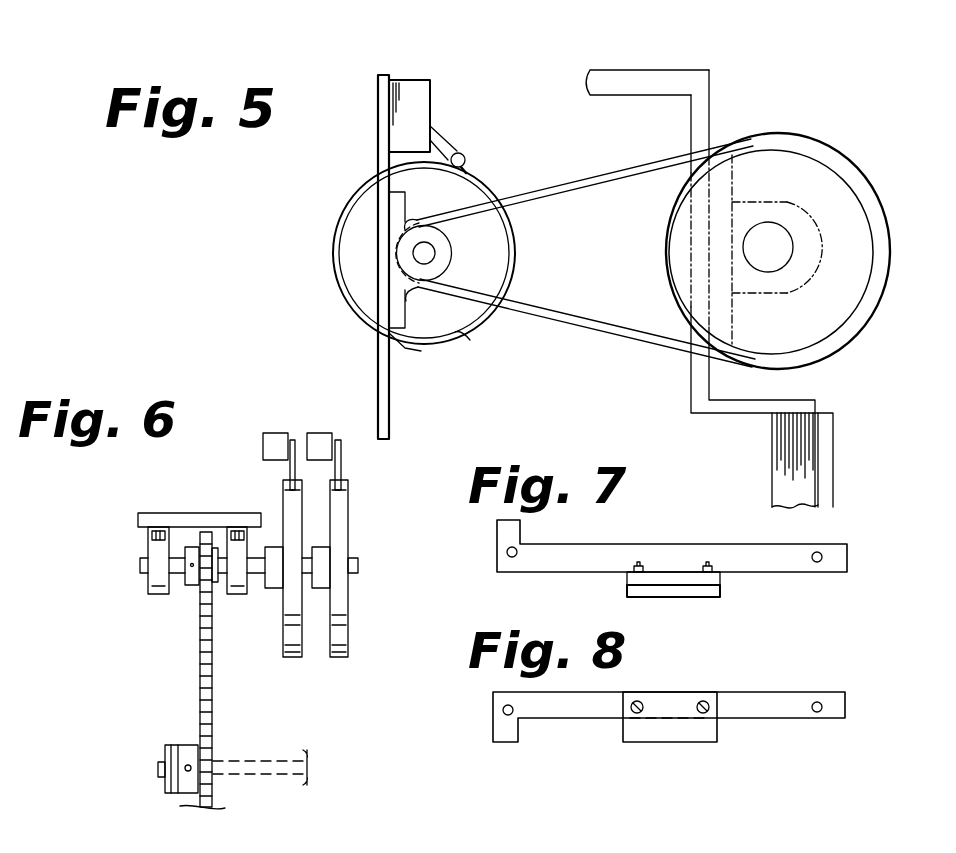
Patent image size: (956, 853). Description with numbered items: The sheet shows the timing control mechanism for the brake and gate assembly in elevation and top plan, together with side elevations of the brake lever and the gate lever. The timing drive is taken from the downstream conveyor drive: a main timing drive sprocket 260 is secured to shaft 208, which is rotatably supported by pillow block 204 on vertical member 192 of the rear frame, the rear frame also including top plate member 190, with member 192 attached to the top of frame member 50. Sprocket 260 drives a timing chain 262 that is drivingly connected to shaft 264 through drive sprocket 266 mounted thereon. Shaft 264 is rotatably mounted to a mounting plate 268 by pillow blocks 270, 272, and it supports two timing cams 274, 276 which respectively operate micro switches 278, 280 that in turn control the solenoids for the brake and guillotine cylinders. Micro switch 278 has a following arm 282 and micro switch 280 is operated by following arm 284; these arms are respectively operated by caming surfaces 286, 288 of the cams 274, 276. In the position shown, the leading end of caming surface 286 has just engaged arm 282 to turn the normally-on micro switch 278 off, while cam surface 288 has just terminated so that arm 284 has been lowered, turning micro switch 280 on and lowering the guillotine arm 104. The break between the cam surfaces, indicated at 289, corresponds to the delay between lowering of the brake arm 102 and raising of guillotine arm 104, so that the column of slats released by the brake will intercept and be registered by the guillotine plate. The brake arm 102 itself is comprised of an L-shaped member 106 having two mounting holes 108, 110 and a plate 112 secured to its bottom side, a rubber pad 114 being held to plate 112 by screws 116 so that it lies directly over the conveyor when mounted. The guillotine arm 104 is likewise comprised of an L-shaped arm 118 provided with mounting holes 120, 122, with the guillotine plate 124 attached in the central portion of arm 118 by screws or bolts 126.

In FIG. 5, the frame member 50 is at (780, 445).
In FIG. 7, the brake arm 102 is at (588, 544).
In FIG. 8, the guillotine arm 104 is at (620, 682).
In FIG. 7, the L-shaped member 106 is at (758, 568).
In FIG. 7, the mounting hole 108 is at (507, 550).
In FIG. 7, the mounting hole 110 is at (817, 563).
In FIG. 7, the plate 112 is at (627, 578).
In FIG. 7, the rubber pad 114 is at (658, 598).
In FIG. 7, the screws 116 is at (712, 562).
In FIG. 8, the L-shaped arm 118 is at (742, 705).
In FIG. 8, the mounting hole 120 is at (503, 710).
In FIG. 8, the mounting hole 122 is at (815, 713).
In FIG. 8, the guillotine plate 124 is at (638, 745).
In FIG. 8, the screws or bolts 126 is at (705, 700).
In FIG. 5, the top plate member 190 is at (640, 70).
In FIG. 5, the vertical member 192 is at (707, 92).
In FIG. 5, the pillow block 204 is at (762, 297).
In FIG. 5, the shaft 208 is at (768, 247).
In FIG. 6, the shaft 208 is at (158, 775).
In FIG. 5, the main timing drive sprocket 260 is at (798, 300).
In FIG. 6, the main timing drive sprocket 260 is at (188, 745).
In FIG. 5, the timing chain 262 is at (590, 320).
In FIG. 6, the timing chain 262 is at (250, 720).
In FIG. 5, the shaft 264 is at (421, 256).
In FIG. 6, the shaft 264 is at (140, 570).
In FIG. 5, the drive sprocket 266 is at (408, 246).
In FIG. 6, the drive sprocket 266 is at (190, 588).
In FIG. 5, the mounting plate 268 is at (390, 415).
In FIG. 6, the mounting plate 268 is at (170, 518).
In FIG. 5, the pillow block 270 is at (418, 347).
In FIG. 6, the pillow block 270 is at (150, 592).
In FIG. 6, the pillow block 272 is at (262, 592).
In FIG. 5, the timing cam 274 is at (495, 273).
In FIG. 6, the timing cam 274 is at (262, 625).
In FIG. 6, the timing cam 276 is at (350, 605).
In FIG. 5, the micro switch 278 is at (432, 93).
In FIG. 6, the micro switch 278 is at (270, 437).
In FIG. 6, the micro switch 280 is at (335, 414).
In FIG. 5, the following arm 282 is at (460, 152).
In FIG. 6, the following arm 282 is at (290, 468).
In FIG. 5, the following arm 284 is at (431, 142).
In FIG. 6, the following arm 284 is at (341, 470).
In FIG. 5, the caming surface 286 is at (345, 208).
In FIG. 6, the caming surface 286 is at (293, 658).
In FIG. 5, the caming surface 288 is at (510, 235).
In FIG. 6, the caming surface 288 is at (338, 658).
In FIG. 5, the break between cam surfaces 289 is at (473, 338).